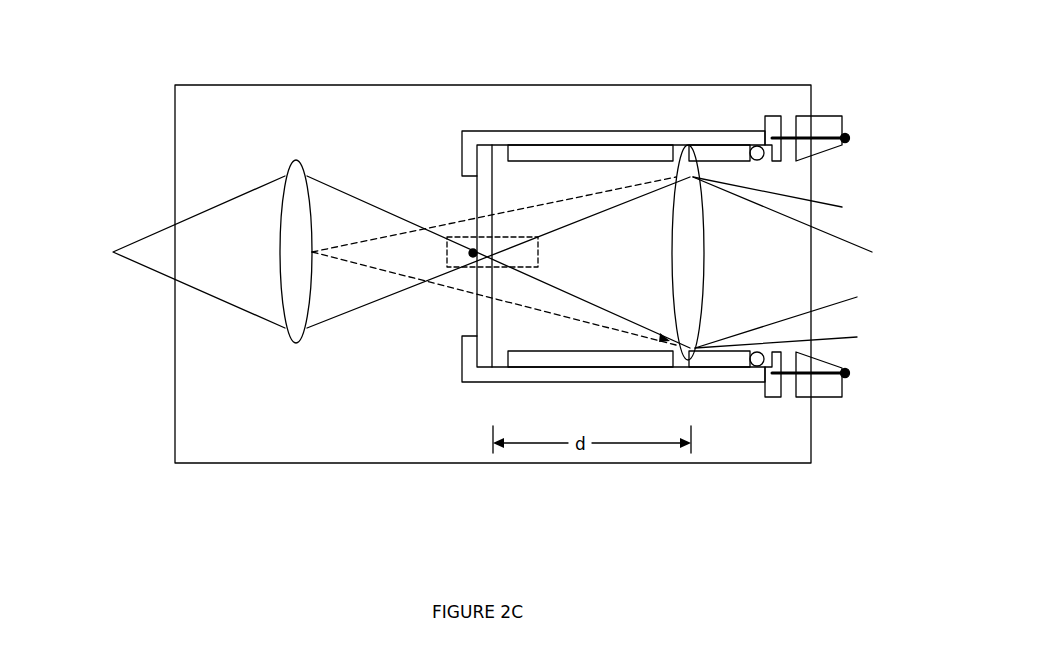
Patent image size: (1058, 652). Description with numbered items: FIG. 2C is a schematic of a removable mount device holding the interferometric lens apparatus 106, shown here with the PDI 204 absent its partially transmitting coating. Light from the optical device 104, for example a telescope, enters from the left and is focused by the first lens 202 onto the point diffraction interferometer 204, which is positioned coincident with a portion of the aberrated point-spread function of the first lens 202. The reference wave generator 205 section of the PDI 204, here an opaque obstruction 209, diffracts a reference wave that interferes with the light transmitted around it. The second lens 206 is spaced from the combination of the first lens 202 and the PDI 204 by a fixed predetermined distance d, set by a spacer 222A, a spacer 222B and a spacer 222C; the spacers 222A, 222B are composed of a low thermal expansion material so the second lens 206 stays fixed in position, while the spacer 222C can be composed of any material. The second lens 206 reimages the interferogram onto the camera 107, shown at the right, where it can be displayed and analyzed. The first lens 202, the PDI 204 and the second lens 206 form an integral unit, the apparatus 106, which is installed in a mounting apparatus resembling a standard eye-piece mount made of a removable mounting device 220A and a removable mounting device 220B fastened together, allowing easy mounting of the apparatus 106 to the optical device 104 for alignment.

The optical device 104 is at (160, 252).
The interferometric lens apparatus 106 is at (720, 85).
The camera 107 is at (808, 262).
The first lens 202 is at (285, 168).
The point diffraction interferometer 204 is at (392, 131).
The reference wave generator section 205 is at (545, 253).
The second lens 206 is at (705, 207).
The opaque obstruction 209 is at (462, 252).
The removable mounting device 220A is at (584, 137).
The removable mounting device 220B is at (838, 128).
The spacer 222A is at (538, 155).
The spacer 222B is at (660, 153).
The spacer 222C is at (757, 147).